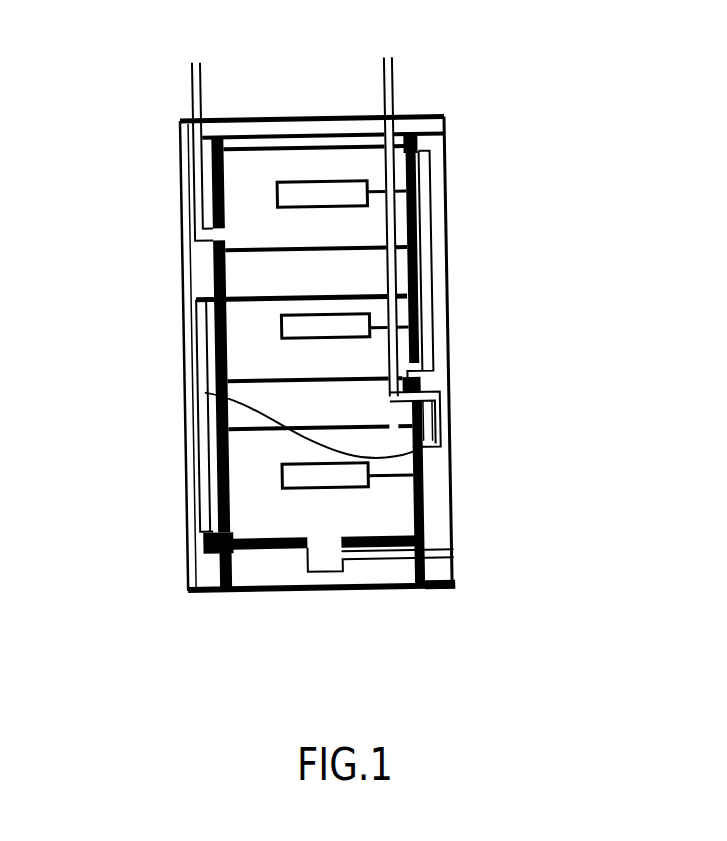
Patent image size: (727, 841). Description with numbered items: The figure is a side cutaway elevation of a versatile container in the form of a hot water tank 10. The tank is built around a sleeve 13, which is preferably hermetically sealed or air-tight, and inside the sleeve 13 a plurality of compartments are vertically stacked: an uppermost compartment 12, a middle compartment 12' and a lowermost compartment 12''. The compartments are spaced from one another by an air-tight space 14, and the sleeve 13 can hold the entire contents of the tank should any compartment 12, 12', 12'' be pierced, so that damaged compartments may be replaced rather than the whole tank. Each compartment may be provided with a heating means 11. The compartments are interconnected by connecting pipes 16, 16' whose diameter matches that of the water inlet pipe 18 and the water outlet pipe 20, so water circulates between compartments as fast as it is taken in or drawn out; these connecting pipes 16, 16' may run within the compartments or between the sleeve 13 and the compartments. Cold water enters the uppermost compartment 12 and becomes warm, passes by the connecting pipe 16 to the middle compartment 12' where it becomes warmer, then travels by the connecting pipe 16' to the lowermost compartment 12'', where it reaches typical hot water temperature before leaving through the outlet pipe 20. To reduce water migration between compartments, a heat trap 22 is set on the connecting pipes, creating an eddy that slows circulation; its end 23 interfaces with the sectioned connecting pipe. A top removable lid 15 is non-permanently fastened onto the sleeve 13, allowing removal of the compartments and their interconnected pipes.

The hot water tank 10 is at (198, 617).
The heating means 11 is at (313, 174).
The uppermost compartment 12 is at (308, 183).
The middle compartment 12' is at (242, 386).
The lowermost compartment 12'' is at (336, 505).
The sleeve 13 is at (183, 275).
The air-tight space 14 is at (303, 335).
The top removable lid 15 is at (308, 116).
The connecting pipe 16 is at (457, 271).
The connecting pipe 16' is at (256, 414).
The water inlet pipe 18 is at (192, 83).
The water outlet pipe 20 is at (395, 80).
The heat trap 22 is at (435, 283).
The end 23 is at (422, 448).